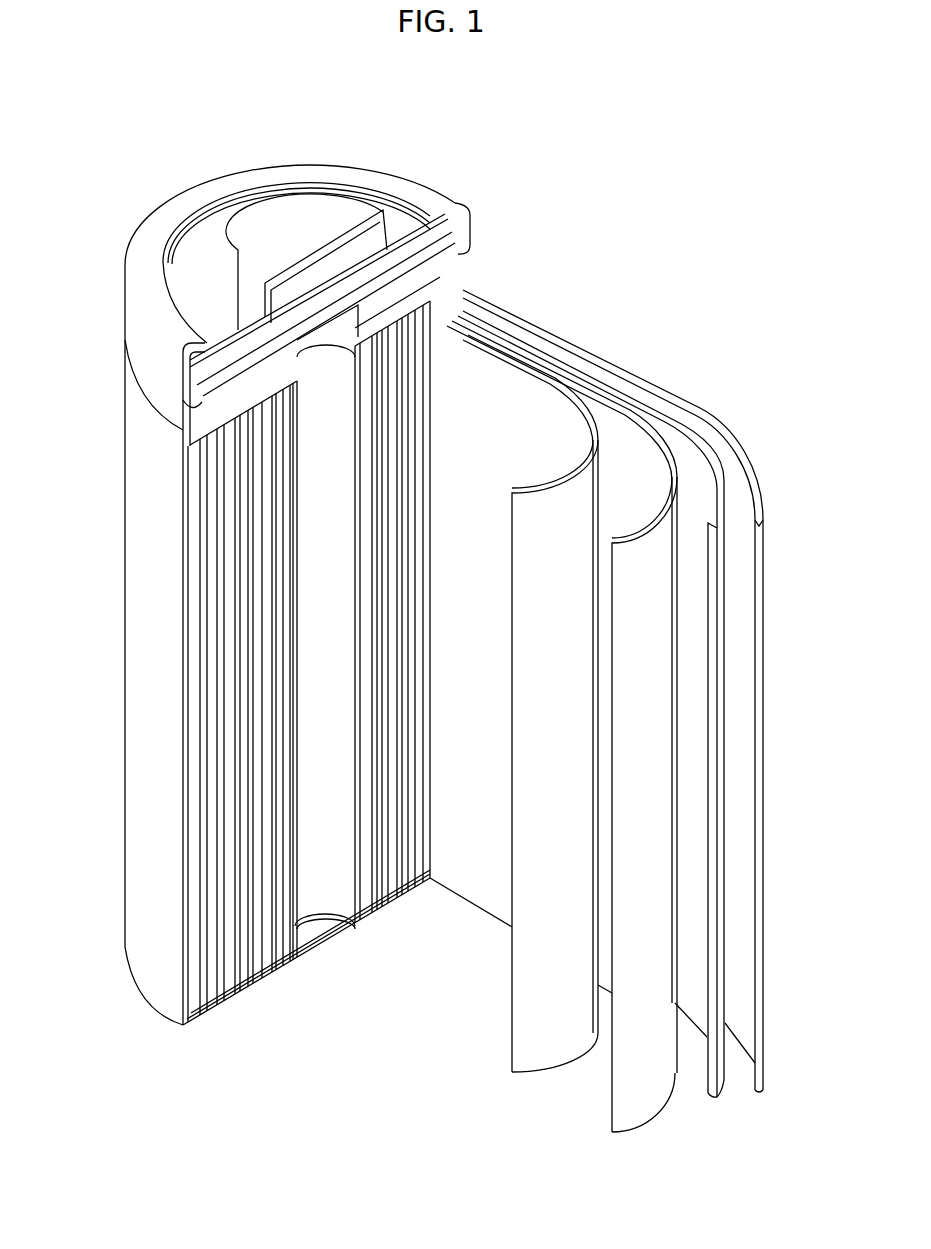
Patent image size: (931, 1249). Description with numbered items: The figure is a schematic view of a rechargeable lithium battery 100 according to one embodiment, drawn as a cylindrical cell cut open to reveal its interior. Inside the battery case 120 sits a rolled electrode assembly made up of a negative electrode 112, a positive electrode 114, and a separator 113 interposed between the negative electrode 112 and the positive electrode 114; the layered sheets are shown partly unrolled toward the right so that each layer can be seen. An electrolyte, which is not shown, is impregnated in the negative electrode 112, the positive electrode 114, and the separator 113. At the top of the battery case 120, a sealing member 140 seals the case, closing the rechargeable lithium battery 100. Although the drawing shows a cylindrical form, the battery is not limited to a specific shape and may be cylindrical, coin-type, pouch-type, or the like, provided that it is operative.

The rechargeable lithium battery 100 is at (566, 152).
The negative electrode 112 is at (746, 478).
The separator 113 is at (547, 407).
The positive electrode 114 is at (619, 447).
The battery case 120 is at (155, 980).
The sealing member 140 is at (277, 227).